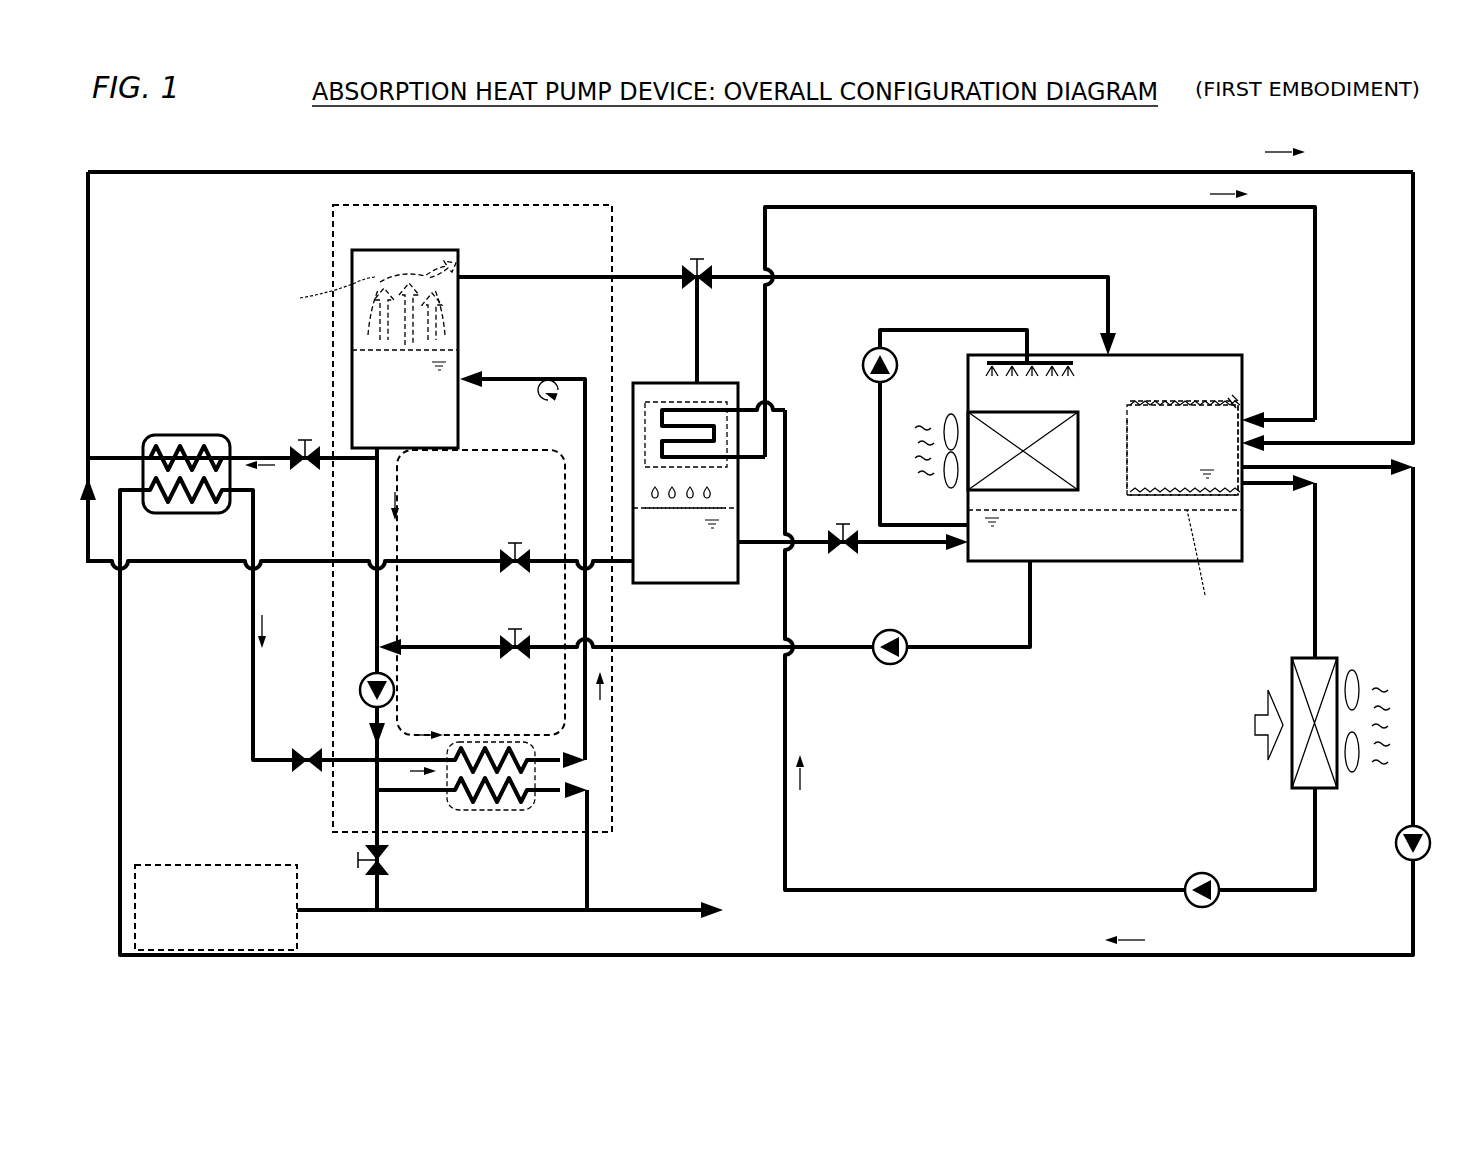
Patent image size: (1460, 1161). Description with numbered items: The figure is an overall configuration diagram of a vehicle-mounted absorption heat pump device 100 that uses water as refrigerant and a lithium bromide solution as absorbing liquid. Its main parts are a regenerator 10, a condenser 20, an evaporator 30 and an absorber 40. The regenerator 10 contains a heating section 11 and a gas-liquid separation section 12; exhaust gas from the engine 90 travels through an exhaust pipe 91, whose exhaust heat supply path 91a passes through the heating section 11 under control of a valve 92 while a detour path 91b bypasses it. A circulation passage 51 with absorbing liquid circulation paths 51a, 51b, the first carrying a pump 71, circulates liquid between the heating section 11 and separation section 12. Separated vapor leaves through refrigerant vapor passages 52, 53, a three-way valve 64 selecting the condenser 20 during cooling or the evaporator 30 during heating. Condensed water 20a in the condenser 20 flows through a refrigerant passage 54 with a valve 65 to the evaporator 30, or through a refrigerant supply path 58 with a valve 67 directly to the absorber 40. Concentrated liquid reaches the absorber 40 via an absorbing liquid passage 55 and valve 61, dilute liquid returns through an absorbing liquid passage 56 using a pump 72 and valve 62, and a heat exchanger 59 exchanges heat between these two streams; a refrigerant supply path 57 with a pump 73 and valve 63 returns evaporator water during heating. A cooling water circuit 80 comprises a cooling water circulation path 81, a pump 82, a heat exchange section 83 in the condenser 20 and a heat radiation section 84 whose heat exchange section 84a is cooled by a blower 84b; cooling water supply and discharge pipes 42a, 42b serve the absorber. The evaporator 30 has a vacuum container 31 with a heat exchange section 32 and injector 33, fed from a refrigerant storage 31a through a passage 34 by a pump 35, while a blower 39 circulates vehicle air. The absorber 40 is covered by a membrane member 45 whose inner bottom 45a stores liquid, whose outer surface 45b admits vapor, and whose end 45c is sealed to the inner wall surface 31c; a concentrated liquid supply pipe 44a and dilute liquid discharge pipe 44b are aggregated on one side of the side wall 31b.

The absorption heat pump device 100 is at (148, 157).
The regenerator 10 is at (580, 205).
The heating section 11 is at (443, 800).
The gas-liquid separation section 12 is at (460, 333).
The condenser 20 is at (660, 383).
The refrigerant (water) in condenser 20a is at (743, 566).
The evaporator 30 is at (1055, 345).
The container 31 is at (1210, 352).
The refrigerant storage 31a is at (1248, 505).
The side wall 31b is at (1240, 362).
The inner wall surface 31c is at (1238, 372).
The heat exchange section 32 is at (1082, 455).
The injector 33 is at (988, 360).
The passage 34 is at (915, 329).
The pump 35 is at (866, 350).
The blower 39 is at (950, 411).
The absorber 40 is at (1178, 392).
The membrane member 45 is at (1135, 405).
The inner bottom 45a is at (1155, 557).
The outer surface 45b is at (1118, 510).
The end 45c is at (1238, 400).
The circulation passage 51 is at (555, 327).
The absorbing liquid circulation path 51a is at (369, 517).
The absorbing liquid circulation path 51b is at (570, 377).
The refrigerant vapor passage 52 is at (597, 276).
The refrigerant vapor passage 53 is at (960, 275).
The refrigerant passage 54 is at (808, 540).
The absorbing liquid passage 55 is at (117, 453).
The absorbing liquid passage 56 is at (912, 953).
The refrigerant supply path 57 is at (940, 645).
The refrigerant supply path 58 is at (310, 559).
The heat exchanger 59 is at (213, 433).
The valve 61 is at (295, 440).
The valve 62 is at (305, 747).
The valve 63 is at (512, 627).
The three-way valve 64 is at (706, 252).
The valve 65 is at (840, 522).
The valve 67 is at (512, 543).
The pump 71 is at (370, 675).
The pump 72 is at (1426, 840).
The pump 73 is at (878, 632).
The cooling water circuit 80 is at (1295, 615).
The cooling water circulation path 81 is at (1315, 305).
The pump 82 is at (1193, 875).
The heat exchange section 83 is at (715, 402).
The heat radiation section 84 is at (1333, 640).
The heat exchange section 84a is at (1290, 678).
The blower 84b is at (1360, 678).
The engine 90 is at (225, 863).
The exhaust pipe 91 is at (322, 907).
The exhaust heat supply path 91a is at (370, 800).
The detour path 91b is at (540, 907).
The valve 92 is at (355, 858).
The cooling water supply pipe 42a is at (1322, 518).
The cooling water discharge pipe 42b is at (1318, 395).
The concentrated liquid supply pipe 44a is at (1325, 434).
The dilute liquid discharge pipe 44b is at (1325, 470).